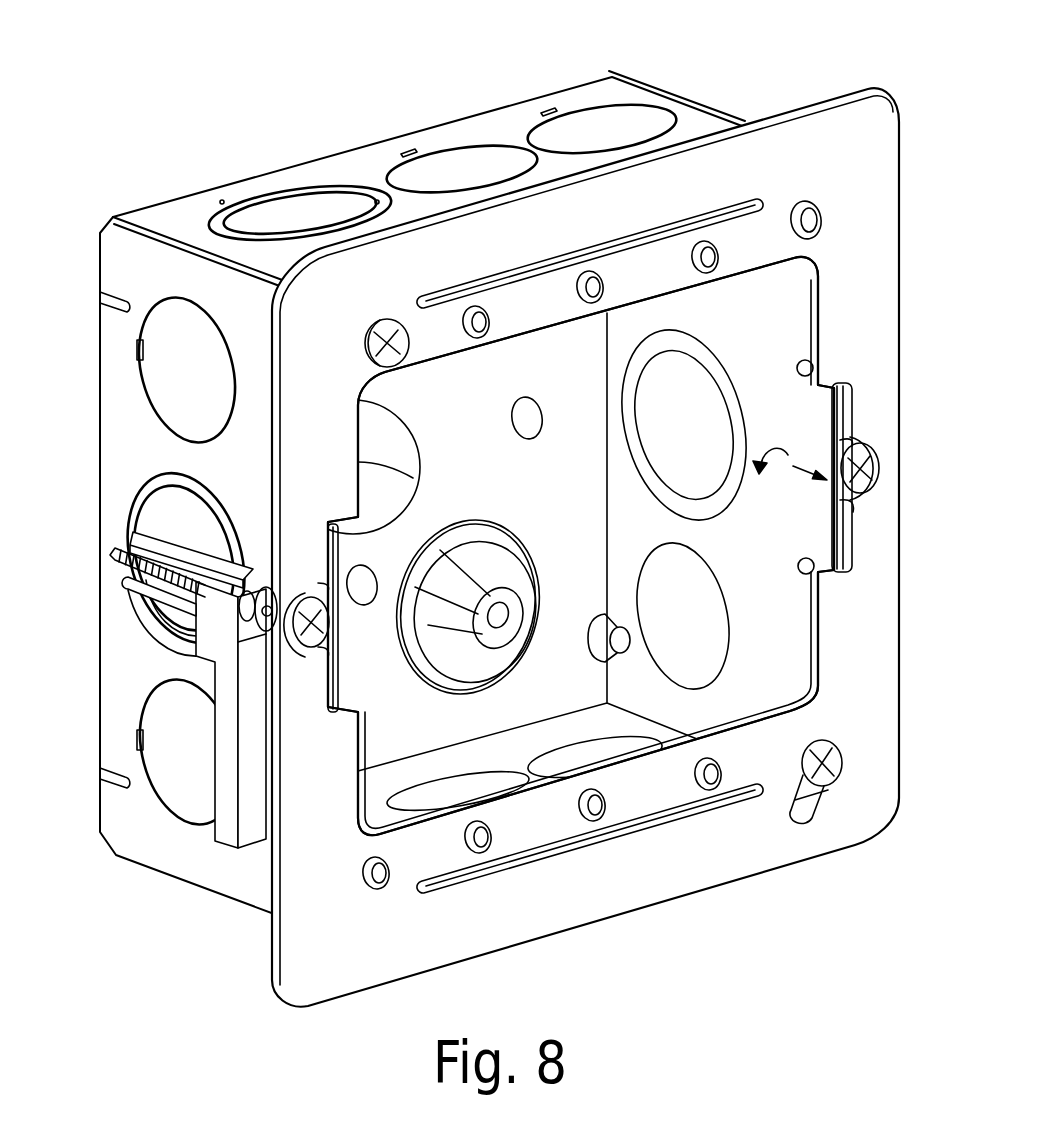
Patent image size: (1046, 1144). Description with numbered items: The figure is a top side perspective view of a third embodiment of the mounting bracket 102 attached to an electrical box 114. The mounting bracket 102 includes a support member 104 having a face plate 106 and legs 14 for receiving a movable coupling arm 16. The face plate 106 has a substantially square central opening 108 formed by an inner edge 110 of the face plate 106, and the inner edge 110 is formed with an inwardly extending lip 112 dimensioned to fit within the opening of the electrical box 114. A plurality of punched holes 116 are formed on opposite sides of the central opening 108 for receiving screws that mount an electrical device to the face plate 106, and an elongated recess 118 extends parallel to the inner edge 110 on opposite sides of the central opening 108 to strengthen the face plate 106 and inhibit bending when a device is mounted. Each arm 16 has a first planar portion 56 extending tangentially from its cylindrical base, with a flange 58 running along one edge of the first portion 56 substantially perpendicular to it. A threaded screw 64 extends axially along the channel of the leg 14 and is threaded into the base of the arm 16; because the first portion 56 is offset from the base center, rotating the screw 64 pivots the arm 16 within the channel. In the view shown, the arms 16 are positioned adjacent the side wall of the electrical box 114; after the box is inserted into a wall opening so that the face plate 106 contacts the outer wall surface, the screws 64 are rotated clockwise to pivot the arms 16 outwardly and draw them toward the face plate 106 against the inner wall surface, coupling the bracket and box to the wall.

The legs 14 is at (159, 753).
The coupling arms 16 is at (188, 778).
The first planar portion 56 is at (220, 778).
The flange 58 is at (252, 825).
The threaded screw 64 is at (866, 445).
The mounting bracket 102 is at (824, 92).
The support member 104 is at (772, 140).
The face plate 106 is at (407, 252).
The central opening 108 is at (436, 427).
The inner edge 110 is at (414, 478).
The lip 112 is at (800, 300).
The electrical box 114 is at (120, 388).
The punched holes 116 is at (588, 292).
The elongated recess 118 is at (716, 220).